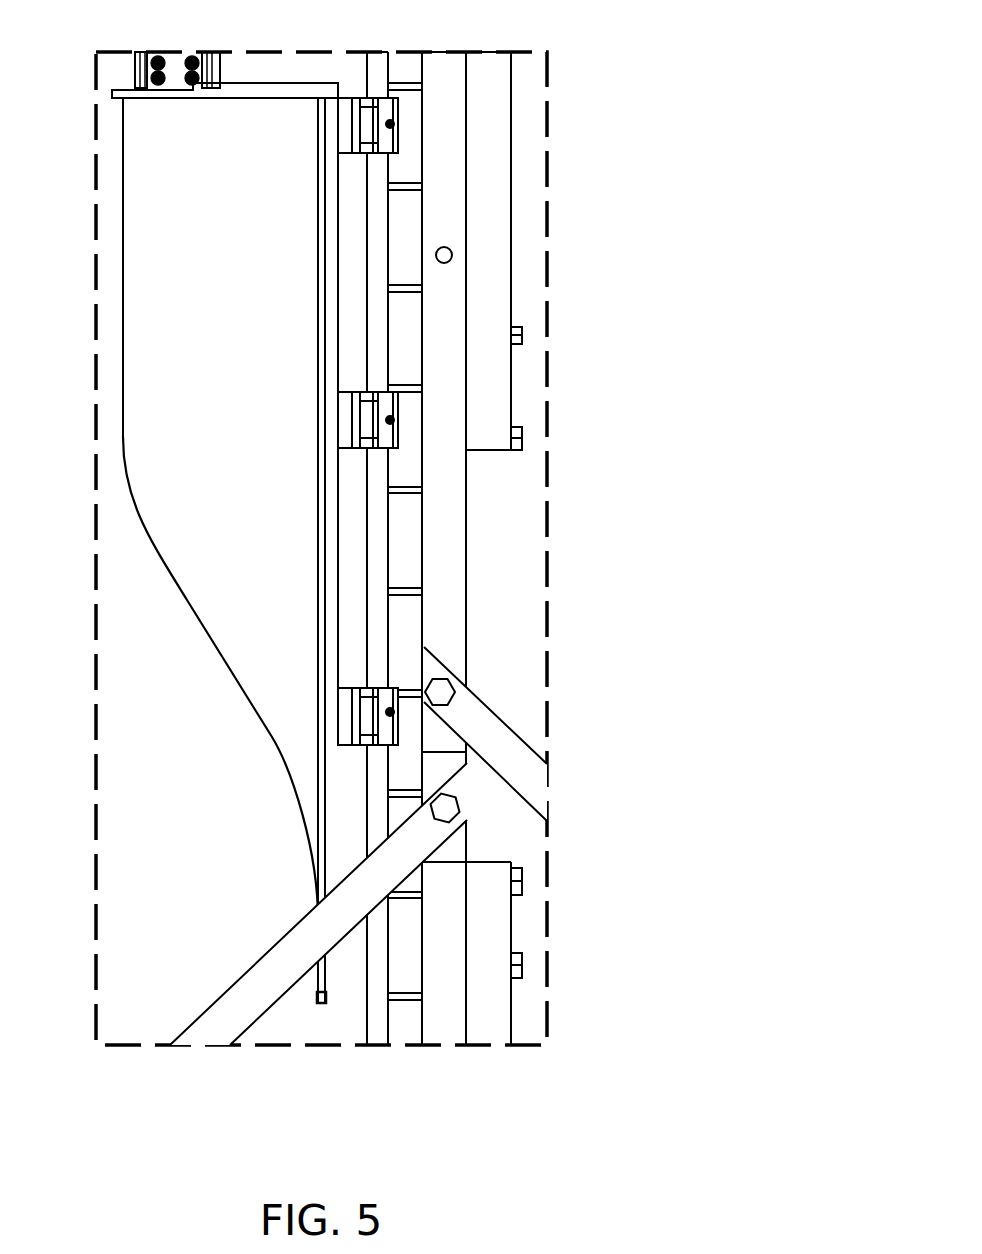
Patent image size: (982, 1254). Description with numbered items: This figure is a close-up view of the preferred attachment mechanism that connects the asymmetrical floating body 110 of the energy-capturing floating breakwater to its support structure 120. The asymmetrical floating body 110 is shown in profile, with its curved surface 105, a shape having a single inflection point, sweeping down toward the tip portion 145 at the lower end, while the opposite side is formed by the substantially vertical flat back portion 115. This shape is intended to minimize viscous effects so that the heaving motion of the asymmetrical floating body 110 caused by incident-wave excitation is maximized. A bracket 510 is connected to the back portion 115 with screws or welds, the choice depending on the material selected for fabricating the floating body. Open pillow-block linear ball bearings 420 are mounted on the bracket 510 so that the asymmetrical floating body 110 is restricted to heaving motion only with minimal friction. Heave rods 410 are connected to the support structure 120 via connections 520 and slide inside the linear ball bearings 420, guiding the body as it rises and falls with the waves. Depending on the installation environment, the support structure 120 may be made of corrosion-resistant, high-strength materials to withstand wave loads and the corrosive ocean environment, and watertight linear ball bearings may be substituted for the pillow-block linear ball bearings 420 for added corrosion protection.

The curved surface 105 is at (212, 637).
The asymmetrical floating body 110 is at (256, 383).
The back portion 115 is at (322, 315).
The support structure 120 is at (275, 967).
The tip portion 145 is at (324, 1003).
The heave rods 410 is at (377, 65).
The open pillow-block linear ball bearings 420 is at (387, 147).
The bracket 510 is at (332, 275).
The connections 520 is at (395, 183).